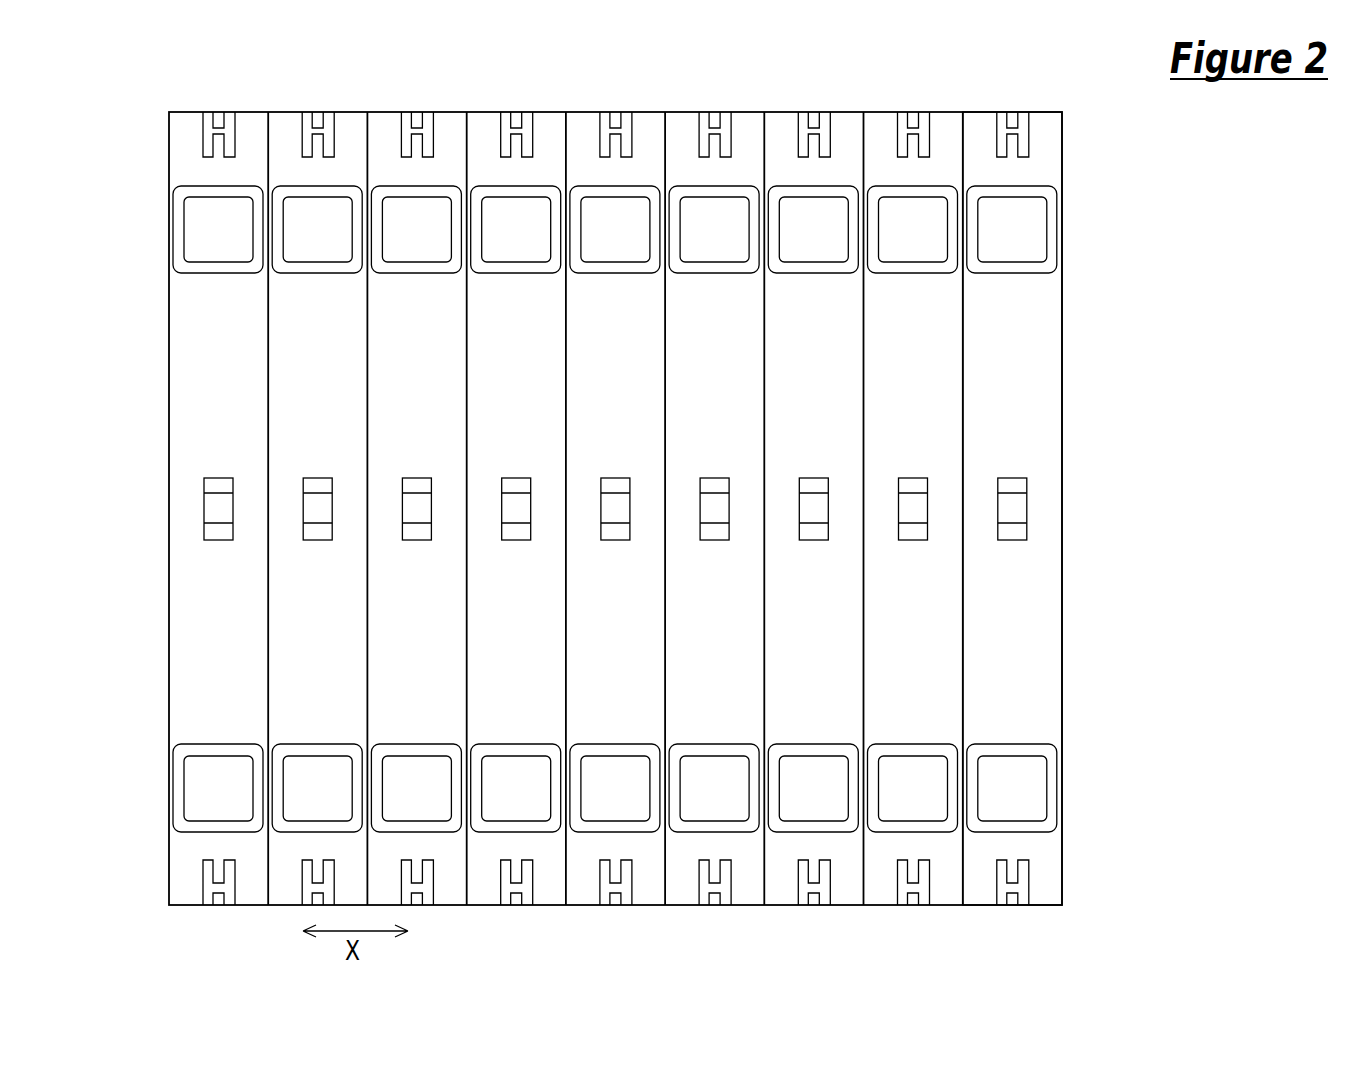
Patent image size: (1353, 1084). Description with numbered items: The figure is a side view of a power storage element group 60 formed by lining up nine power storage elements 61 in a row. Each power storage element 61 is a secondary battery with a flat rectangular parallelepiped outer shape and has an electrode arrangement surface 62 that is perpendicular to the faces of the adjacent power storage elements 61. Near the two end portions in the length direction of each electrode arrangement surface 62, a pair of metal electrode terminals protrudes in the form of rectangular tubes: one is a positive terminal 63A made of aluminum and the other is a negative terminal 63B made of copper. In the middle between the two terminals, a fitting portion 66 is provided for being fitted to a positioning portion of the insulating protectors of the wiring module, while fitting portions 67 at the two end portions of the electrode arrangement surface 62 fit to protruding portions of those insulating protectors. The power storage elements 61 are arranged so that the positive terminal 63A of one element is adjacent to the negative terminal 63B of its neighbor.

The power storage element group 60 is at (866, 87).
The power storage element 61 is at (250, 125).
The electrode arrangement surface 62 is at (1038, 413).
The positive terminal 63A is at (202, 228).
The negative terminal 63B is at (905, 238).
The fitting portion 66 is at (218, 487).
The fitting portion 67 is at (1023, 148).